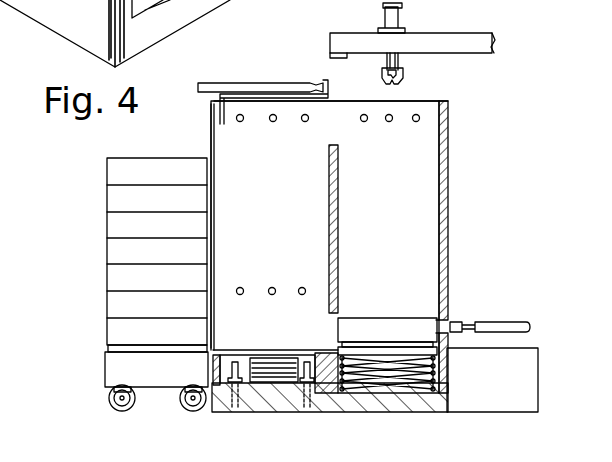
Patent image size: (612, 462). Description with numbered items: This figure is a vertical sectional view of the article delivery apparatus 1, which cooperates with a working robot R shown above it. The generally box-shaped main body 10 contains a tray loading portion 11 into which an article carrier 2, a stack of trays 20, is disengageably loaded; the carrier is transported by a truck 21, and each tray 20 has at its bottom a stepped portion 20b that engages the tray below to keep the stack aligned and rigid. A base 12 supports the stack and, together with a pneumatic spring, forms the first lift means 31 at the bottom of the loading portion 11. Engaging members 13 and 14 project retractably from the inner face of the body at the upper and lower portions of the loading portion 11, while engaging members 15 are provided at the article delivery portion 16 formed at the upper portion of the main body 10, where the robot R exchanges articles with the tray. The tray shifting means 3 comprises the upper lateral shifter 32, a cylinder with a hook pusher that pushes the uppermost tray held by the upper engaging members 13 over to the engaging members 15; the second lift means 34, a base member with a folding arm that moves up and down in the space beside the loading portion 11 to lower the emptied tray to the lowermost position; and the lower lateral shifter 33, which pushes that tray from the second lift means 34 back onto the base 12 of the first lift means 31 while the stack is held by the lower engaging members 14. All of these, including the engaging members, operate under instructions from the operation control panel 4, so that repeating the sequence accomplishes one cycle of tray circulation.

The article delivery apparatus 1 is at (450, 117).
The article carrier 2 is at (239, 269).
The tray shifting means 3 is at (440, 326).
The operation control panel 4 is at (533, 378).
The main body 10 is at (449, 153).
The tray loading portion 11 is at (222, 155).
The base 12 is at (250, 360).
The upper engaging members 13 is at (306, 123).
The lower engaging members 14 is at (302, 287).
The engaging members 15 is at (416, 123).
The article delivery portion 16 is at (417, 101).
The tray 20 is at (148, 165).
The stepped portion 20b is at (107, 348).
The truck 21 is at (108, 366).
The first lift means 31 is at (284, 358).
The upper lateral shifter 32 is at (278, 82).
The lower lateral shifter 33 is at (493, 322).
The second lift means 34 is at (413, 352).
The working robot R is at (436, 40).